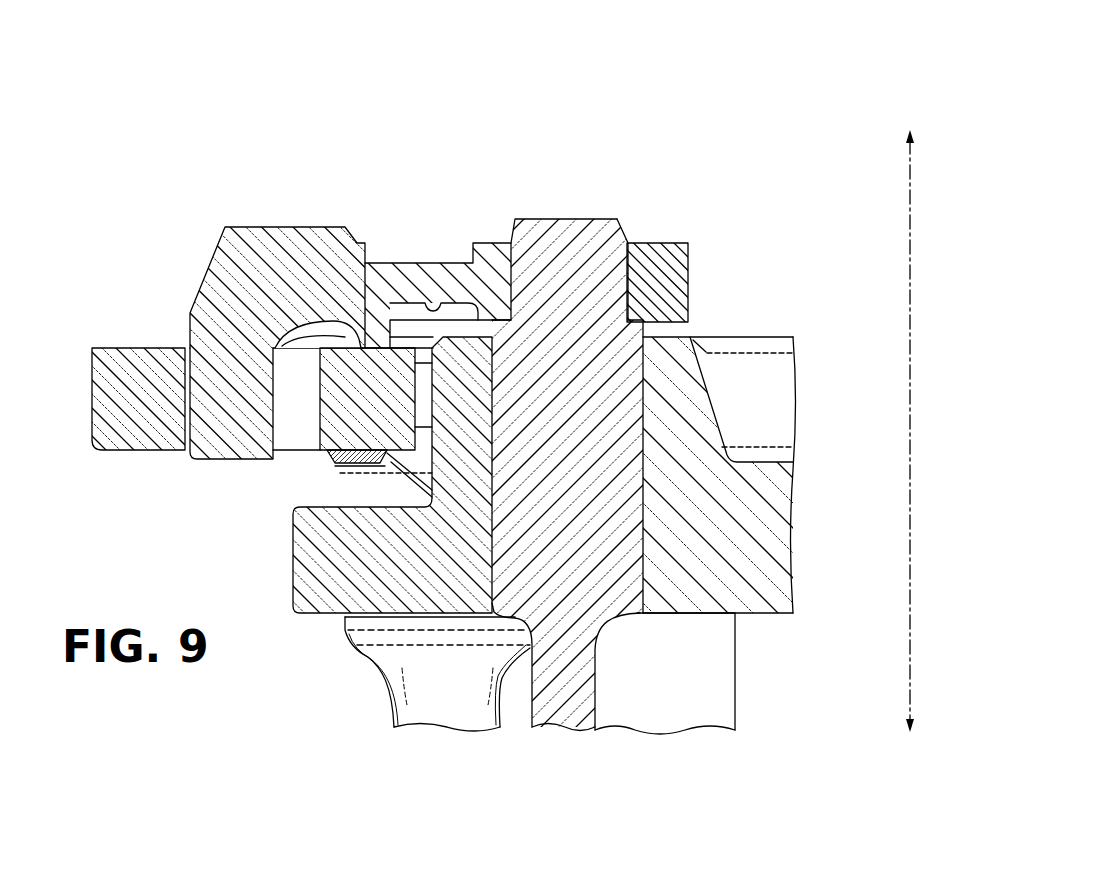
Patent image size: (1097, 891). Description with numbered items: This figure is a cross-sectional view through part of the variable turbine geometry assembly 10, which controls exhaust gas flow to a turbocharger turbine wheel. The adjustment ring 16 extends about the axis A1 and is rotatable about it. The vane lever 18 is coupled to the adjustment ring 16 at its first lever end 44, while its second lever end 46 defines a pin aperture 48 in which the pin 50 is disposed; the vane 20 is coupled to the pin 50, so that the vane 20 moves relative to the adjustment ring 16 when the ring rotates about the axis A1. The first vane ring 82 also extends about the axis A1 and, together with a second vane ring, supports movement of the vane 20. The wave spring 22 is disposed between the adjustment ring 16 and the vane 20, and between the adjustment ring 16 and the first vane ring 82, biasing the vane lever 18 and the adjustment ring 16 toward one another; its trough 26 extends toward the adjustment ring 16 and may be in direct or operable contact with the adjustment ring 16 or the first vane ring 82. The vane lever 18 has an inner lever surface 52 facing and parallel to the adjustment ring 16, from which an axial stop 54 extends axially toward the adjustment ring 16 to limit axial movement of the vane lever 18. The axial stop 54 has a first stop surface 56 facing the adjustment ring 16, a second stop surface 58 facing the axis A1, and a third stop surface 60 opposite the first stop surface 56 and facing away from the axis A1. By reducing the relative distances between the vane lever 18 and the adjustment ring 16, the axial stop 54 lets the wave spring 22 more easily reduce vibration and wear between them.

The variable turbine geometry assembly 10 is at (755, 88).
The axis A1 is at (910, 419).
The adjustment ring 16 is at (92, 394).
The vane lever 18 is at (420, 283).
The vane 20 is at (700, 685).
The wave spring 22 is at (407, 483).
The trough 26 is at (375, 458).
The first lever end 44 is at (210, 427).
The second lever end 46 is at (663, 275).
The pin aperture 48 is at (612, 284).
The pin 50 is at (585, 420).
The inner lever surface 52 is at (273, 338).
The axial stop 54 is at (357, 333).
The first stop surface 56 is at (370, 337).
The second stop surface 58 is at (518, 270).
The third stop surface 60 is at (343, 324).
The first vane ring 82 is at (730, 533).